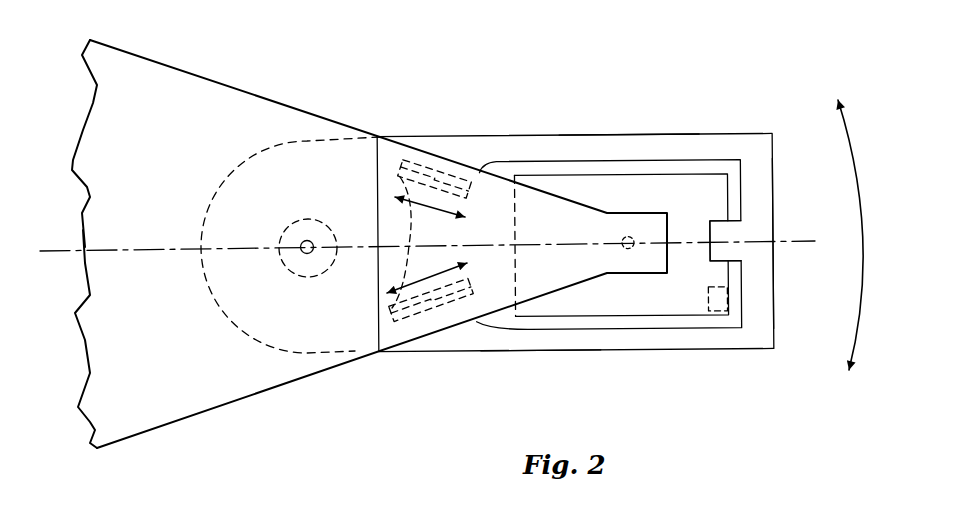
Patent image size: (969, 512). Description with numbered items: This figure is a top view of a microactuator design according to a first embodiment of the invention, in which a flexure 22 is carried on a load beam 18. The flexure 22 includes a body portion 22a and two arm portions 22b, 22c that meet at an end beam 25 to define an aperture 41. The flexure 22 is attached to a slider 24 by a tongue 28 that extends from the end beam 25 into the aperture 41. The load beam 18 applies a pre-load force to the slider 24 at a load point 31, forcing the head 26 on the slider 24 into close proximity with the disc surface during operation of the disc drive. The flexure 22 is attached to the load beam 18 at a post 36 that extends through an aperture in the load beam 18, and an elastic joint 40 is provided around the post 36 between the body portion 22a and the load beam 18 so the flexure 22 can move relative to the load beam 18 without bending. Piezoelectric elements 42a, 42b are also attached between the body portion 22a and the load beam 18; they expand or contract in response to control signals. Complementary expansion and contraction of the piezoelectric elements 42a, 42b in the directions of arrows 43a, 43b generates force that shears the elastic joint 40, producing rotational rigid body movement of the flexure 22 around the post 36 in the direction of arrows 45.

The load beam 18 is at (120, 52).
The flexure 22 is at (712, 130).
The body portion 22a is at (222, 182).
The arm portion 22b is at (585, 142).
The arm portion 22c is at (535, 340).
The slider 24 is at (613, 329).
The end beam 25 is at (762, 187).
The head 26 is at (716, 315).
The tongue 28 is at (711, 251).
The load point 31 is at (629, 238).
The post 36 is at (307, 254).
The elastic joint 40 is at (303, 219).
The aperture 41 is at (498, 168).
The piezoelectric element 42a is at (400, 177).
The piezoelectric element 42b is at (388, 308).
The arrow 43a is at (412, 207).
The arrow 43b is at (407, 280).
The arrows 45 is at (860, 318).